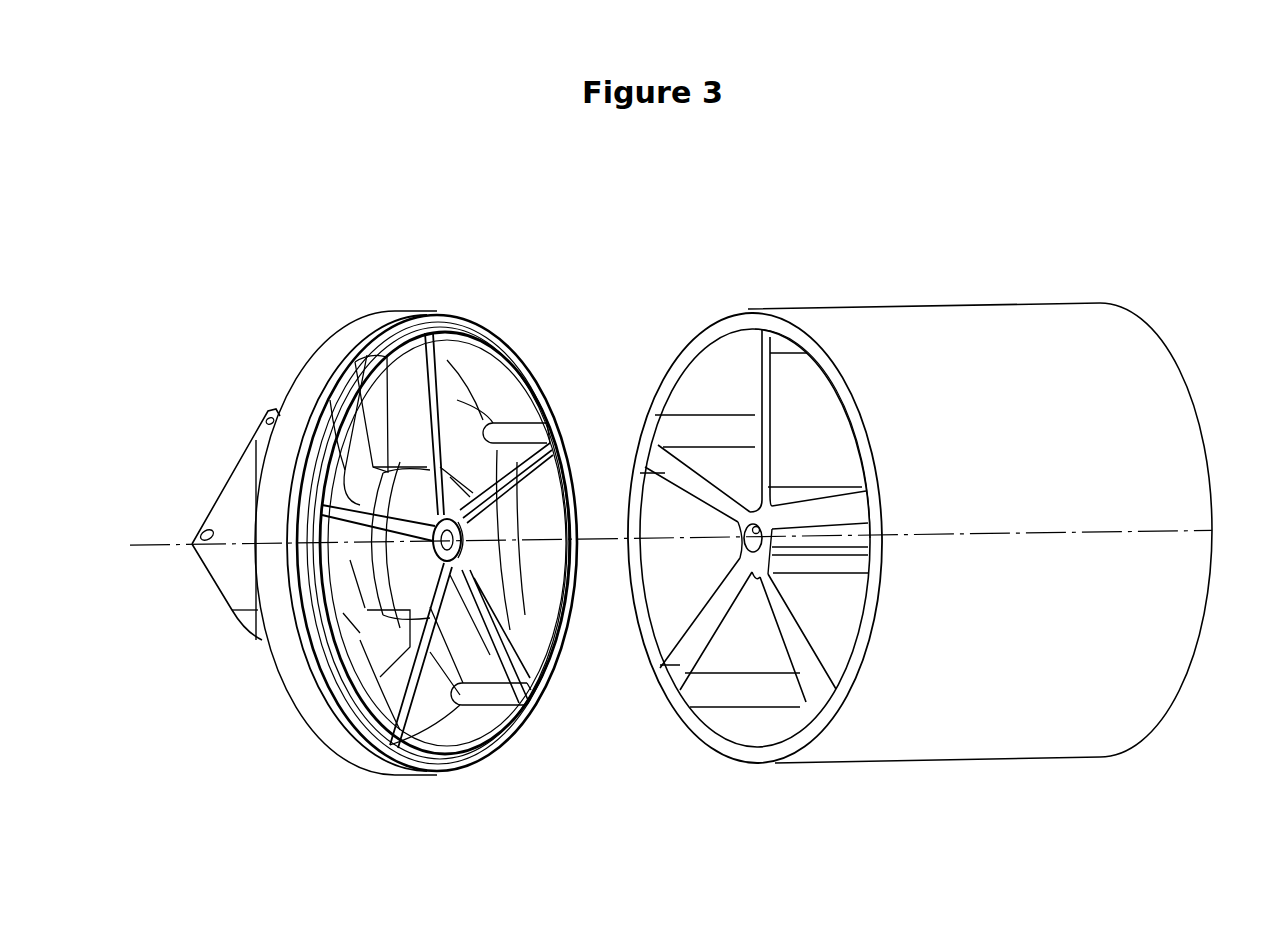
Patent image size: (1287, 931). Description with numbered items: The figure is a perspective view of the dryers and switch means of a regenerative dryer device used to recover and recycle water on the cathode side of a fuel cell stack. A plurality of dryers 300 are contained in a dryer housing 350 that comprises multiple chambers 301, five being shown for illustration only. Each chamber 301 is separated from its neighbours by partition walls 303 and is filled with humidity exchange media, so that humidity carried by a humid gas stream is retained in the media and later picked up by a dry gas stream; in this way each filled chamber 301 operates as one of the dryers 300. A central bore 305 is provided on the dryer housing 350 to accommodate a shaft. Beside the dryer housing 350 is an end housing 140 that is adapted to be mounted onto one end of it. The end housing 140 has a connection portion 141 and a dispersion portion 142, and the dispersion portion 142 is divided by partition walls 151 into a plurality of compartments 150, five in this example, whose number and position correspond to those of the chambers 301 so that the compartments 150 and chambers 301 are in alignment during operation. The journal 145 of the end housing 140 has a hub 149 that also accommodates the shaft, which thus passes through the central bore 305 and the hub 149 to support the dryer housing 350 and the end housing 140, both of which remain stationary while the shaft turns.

The end housing 140 is at (318, 292).
The connection portion 141 is at (228, 498).
The dispersion portion 142 is at (317, 717).
The journal 145 is at (497, 707).
The hub 149 is at (457, 570).
The compartments 150 is at (433, 703).
The partition walls 151 is at (412, 387).
The dryers 300 is at (753, 730).
The chambers 301 is at (710, 380).
The partition walls 303 is at (770, 352).
The central bore 305 is at (756, 531).
The dryer housing 350 is at (950, 267).